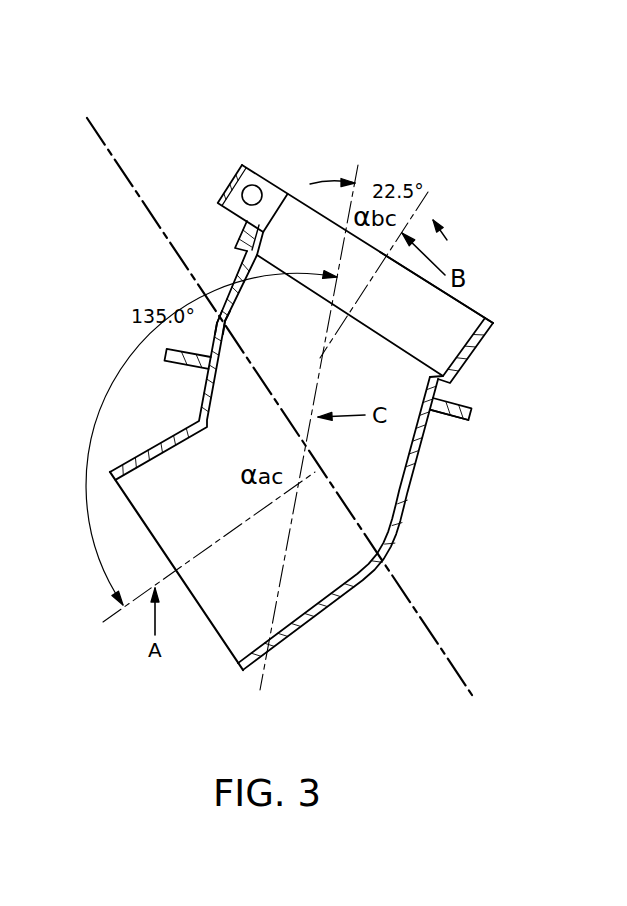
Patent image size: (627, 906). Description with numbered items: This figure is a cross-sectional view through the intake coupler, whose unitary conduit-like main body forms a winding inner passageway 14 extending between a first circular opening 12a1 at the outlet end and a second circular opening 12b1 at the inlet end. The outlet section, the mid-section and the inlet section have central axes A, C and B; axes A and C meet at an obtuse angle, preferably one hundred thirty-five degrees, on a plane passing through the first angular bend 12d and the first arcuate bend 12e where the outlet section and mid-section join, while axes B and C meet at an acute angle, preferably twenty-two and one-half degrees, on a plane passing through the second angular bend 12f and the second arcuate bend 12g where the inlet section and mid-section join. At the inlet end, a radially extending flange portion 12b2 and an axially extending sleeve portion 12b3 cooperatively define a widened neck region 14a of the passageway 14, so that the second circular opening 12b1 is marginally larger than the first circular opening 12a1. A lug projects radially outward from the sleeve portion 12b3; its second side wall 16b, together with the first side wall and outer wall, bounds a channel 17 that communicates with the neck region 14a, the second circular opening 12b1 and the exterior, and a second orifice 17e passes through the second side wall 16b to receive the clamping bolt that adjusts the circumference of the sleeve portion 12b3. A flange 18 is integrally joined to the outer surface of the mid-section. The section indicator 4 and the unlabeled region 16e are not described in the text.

The section line 4- 4 is at (97, 122).
The first circular opening 12a1 is at (227, 643).
The second circular opening 12b1 is at (443, 306).
The radially extending flange portion 12b2 is at (242, 262).
The axially extending sleeve portion 12b3 is at (472, 357).
The first angular bend 12d is at (198, 416).
The first arcuate bend 12e is at (393, 547).
The second angular bend 12f is at (438, 394).
The second arcuate bend 12g is at (225, 323).
The inner passageway 14 is at (372, 473).
The widened neck region 14a is at (302, 222).
The second side wall 16b is at (277, 191).
The clamp block 16e is at (222, 174).
The channel 17 is at (250, 222).
The second orifice 17e is at (252, 185).
The flange 18 is at (462, 419).